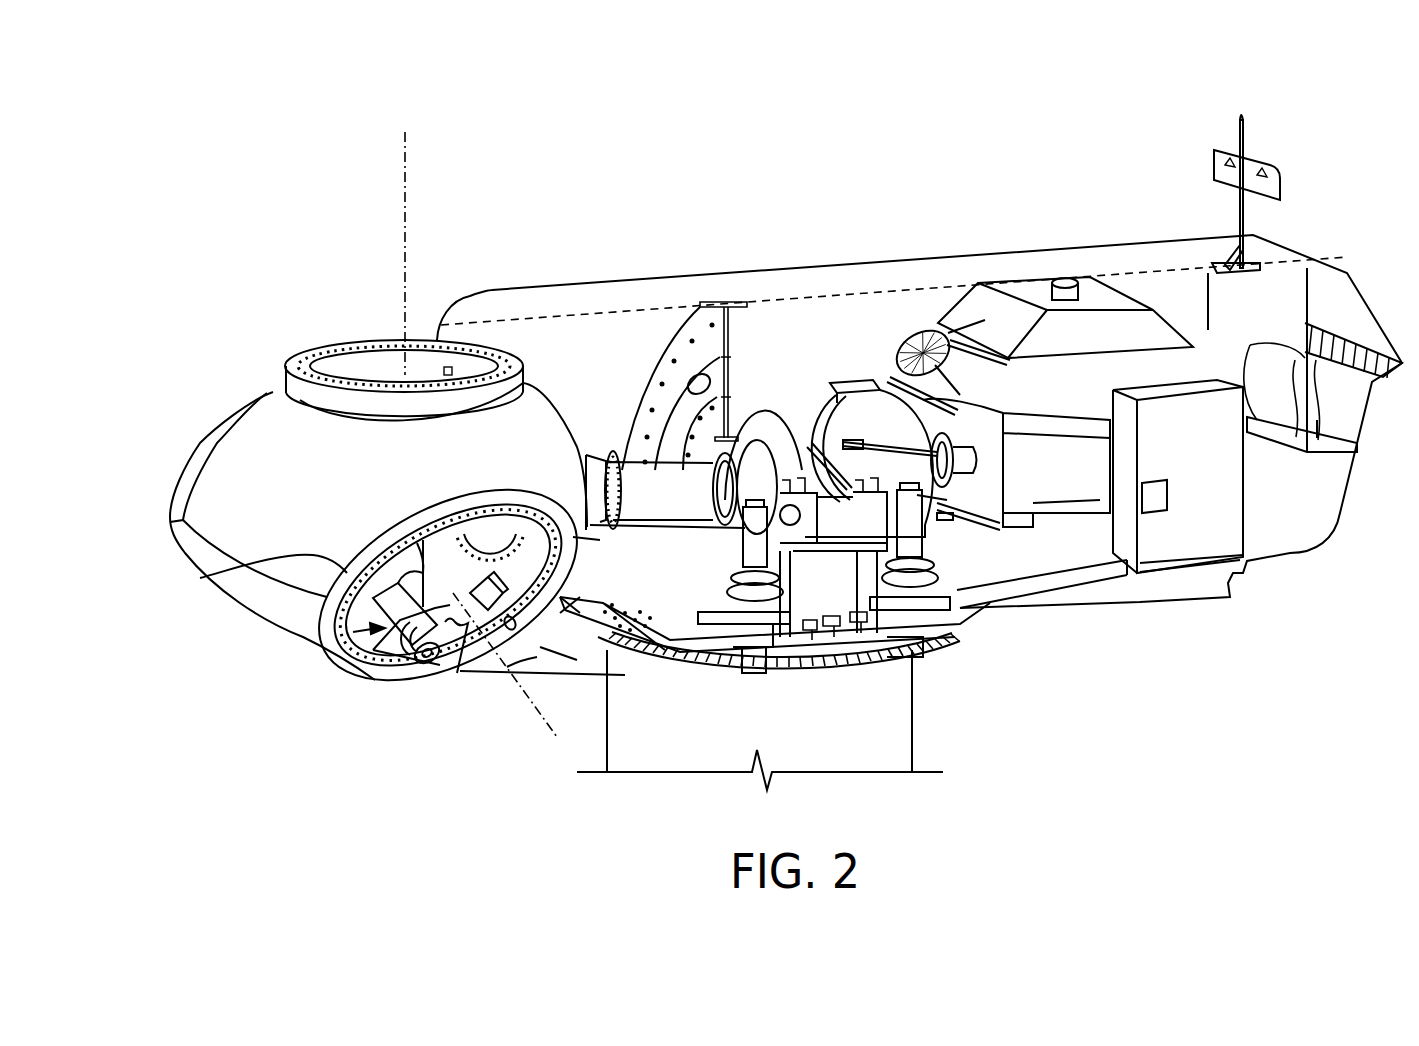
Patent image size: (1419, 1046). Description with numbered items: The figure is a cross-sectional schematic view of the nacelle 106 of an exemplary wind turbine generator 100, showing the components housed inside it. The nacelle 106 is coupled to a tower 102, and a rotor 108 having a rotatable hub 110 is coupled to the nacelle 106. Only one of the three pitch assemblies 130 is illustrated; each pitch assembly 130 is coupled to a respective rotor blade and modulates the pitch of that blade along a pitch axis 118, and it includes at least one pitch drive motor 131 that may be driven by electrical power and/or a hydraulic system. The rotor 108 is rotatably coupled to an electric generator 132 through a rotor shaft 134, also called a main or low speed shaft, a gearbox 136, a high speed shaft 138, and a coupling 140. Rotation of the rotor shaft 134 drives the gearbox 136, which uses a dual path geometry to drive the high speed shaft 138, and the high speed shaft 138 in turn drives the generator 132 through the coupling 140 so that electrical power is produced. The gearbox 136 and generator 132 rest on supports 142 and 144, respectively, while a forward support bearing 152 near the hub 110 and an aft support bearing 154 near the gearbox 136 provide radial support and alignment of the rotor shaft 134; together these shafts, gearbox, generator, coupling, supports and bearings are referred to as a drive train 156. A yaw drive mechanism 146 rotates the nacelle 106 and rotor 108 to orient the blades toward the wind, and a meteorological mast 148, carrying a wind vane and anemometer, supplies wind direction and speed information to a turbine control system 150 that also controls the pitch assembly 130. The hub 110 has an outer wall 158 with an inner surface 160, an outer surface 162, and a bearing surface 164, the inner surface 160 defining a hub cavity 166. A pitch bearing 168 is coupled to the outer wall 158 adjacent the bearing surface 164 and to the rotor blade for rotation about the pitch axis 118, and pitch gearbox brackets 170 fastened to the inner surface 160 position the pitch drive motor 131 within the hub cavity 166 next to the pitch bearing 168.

The wind turbine generator 100 is at (305, 135).
The tower 102 is at (853, 760).
The nacelle 106 is at (920, 158).
The rotor 108 is at (158, 495).
The rotatable hub 110 is at (253, 460).
The pitch axis 118 is at (405, 170).
The pitch assembly 130 is at (428, 488).
The pitch drive motor 131 is at (385, 597).
The electric generator 132 is at (1030, 500).
The rotor shaft 134 is at (623, 460).
The gearbox 136 is at (823, 427).
The high speed shaft 138 is at (958, 480).
The coupling 140 is at (963, 425).
The support 142 is at (852, 545).
The support 144 is at (1033, 487).
The yaw drive mechanism 146 is at (752, 632).
The meteorological mast 148 is at (1260, 152).
The turbine control system 150 is at (1183, 425).
The forward support bearing 152 is at (632, 520).
The aft support bearing 154 is at (747, 453).
The drive train 156 is at (671, 390).
The outer wall 158 is at (333, 628).
The inner surface 160 is at (550, 594).
The outer surface 162 is at (200, 578).
The bearing surface 164 is at (373, 670).
The hub cavity 166 is at (457, 673).
The pitch bearing 168 is at (527, 515).
The pitch gearbox brackets 170 is at (320, 604).